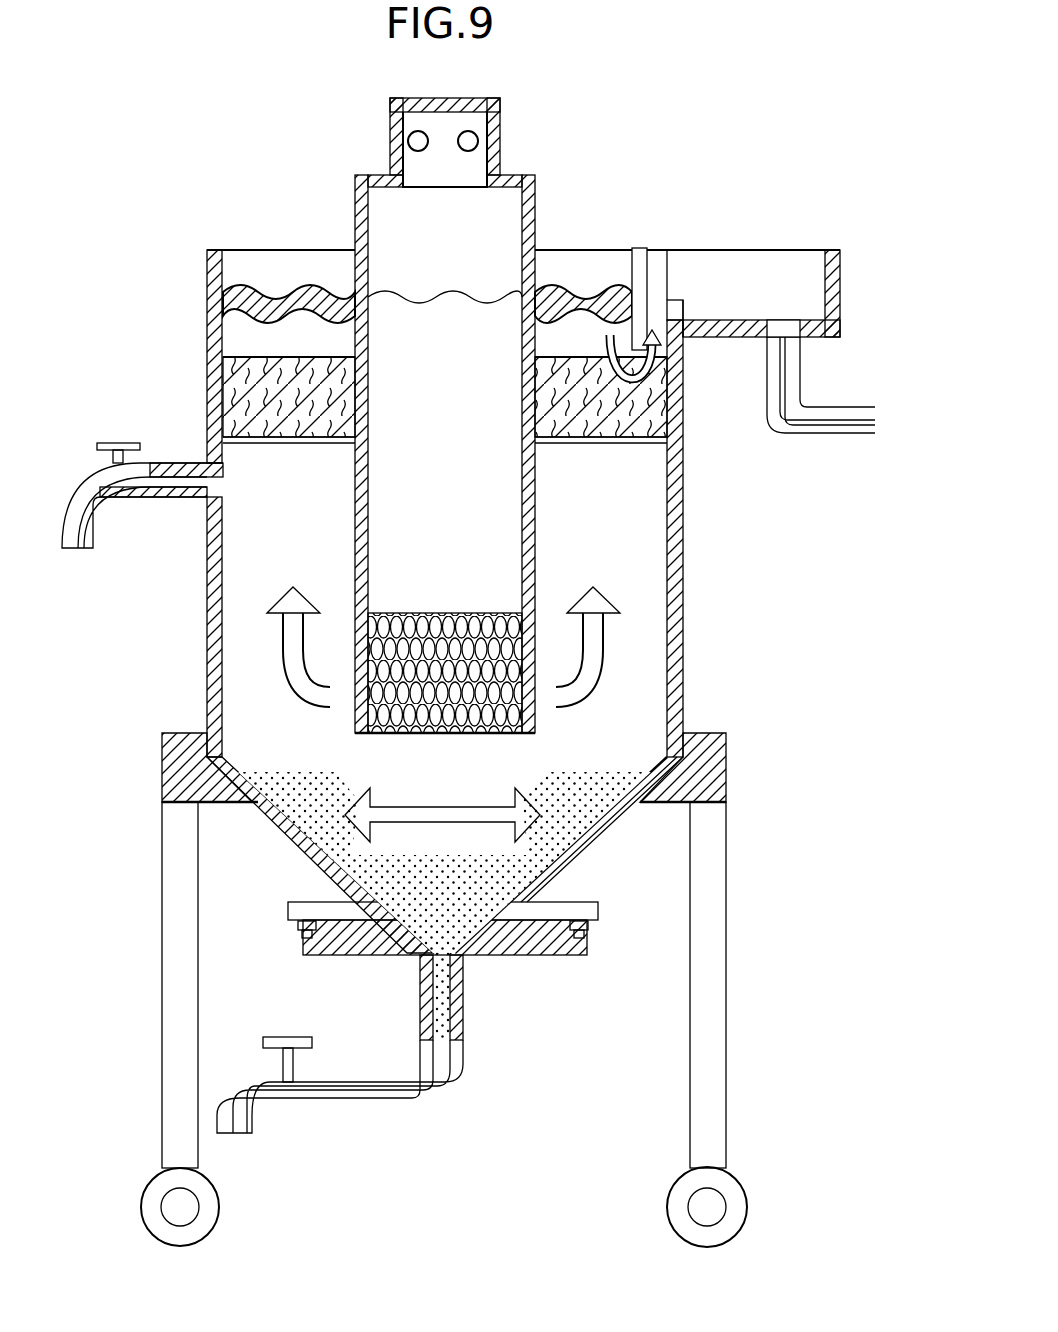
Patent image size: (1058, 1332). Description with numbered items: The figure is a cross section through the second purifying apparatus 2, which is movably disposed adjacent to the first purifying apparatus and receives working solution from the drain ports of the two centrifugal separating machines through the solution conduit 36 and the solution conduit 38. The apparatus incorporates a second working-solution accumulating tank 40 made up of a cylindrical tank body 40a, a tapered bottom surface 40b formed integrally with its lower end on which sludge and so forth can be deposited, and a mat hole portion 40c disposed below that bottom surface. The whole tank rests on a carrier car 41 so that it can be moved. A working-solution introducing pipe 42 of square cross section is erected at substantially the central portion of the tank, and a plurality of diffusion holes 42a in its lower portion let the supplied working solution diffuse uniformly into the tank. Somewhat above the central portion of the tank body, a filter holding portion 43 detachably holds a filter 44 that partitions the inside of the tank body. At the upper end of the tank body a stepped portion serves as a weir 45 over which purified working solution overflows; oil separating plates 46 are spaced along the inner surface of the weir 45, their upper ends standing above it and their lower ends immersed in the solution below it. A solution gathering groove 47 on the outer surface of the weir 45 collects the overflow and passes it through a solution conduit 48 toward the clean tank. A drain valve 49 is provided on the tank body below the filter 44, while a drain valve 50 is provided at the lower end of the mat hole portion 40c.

The second purifying apparatus 2 is at (512, 672).
The solution conduit 36 is at (478, 142).
The solution conduit 38 is at (409, 142).
The second working-solution accumulating tank 40 is at (515, 748).
The tank body 40a is at (678, 686).
The tapered bottom surface 40b is at (593, 842).
The mat hole portion 40c is at (515, 948).
The carrier car 41 is at (713, 778).
The working-solution introducing pipe 42 is at (547, 415).
The diffusion holes 42a is at (537, 590).
The filter holding portion 43 is at (245, 356).
The filter 44 is at (655, 440).
The weir 45 is at (680, 300).
The oil separating plates 46 is at (639, 268).
The solution gathering groove 47 is at (833, 283).
The solution conduit 48 is at (803, 373).
The drain valve 49 is at (133, 500).
The drain valve 50 is at (312, 1086).